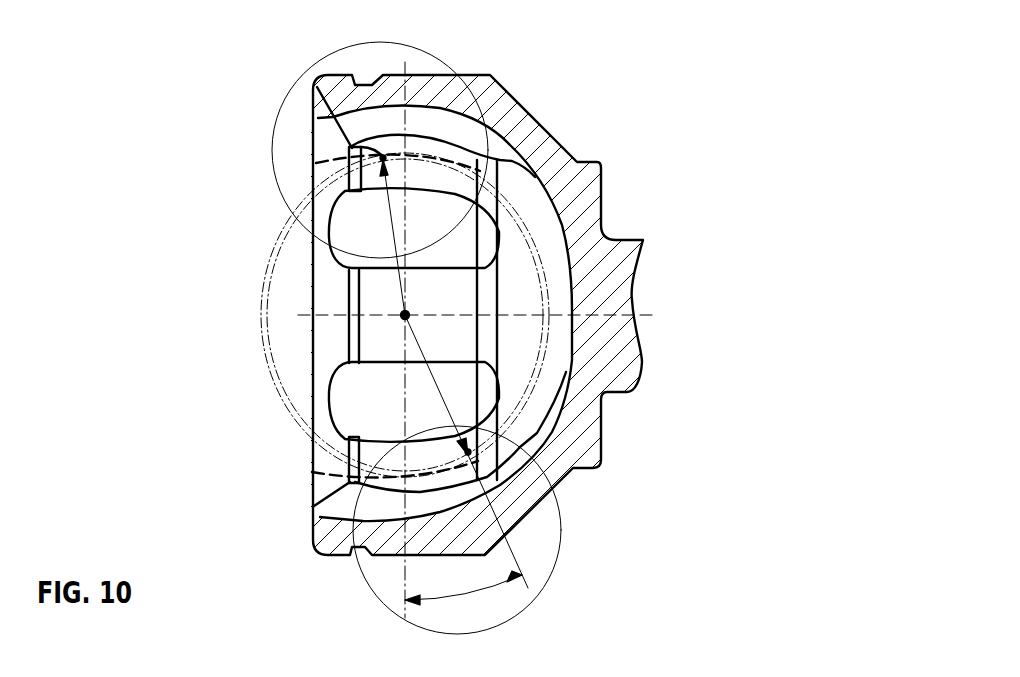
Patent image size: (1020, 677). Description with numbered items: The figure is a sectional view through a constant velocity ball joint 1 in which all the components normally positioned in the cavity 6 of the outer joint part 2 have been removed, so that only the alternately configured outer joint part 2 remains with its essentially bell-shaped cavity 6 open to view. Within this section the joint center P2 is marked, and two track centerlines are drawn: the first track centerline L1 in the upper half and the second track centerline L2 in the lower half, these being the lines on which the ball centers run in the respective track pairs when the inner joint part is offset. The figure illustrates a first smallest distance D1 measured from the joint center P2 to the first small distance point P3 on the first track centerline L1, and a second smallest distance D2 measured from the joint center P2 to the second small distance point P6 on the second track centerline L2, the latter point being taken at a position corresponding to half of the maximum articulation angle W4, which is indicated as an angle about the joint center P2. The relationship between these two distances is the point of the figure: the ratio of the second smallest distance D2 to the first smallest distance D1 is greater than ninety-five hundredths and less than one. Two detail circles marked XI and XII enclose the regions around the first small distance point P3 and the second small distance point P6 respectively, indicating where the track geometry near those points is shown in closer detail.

The constant velocity ball joint 1 is at (623, 214).
The outer joint part 2 is at (548, 125).
The cavity 6 is at (547, 286).
The joint center P2 is at (403, 318).
The first small distance point P3 is at (358, 146).
The second small distance point P6 is at (470, 440).
The first smallest distance D1 is at (356, 247).
The second smallest distance D2 is at (410, 400).
The first track centerline L1 is at (323, 163).
The second track centerline L2 is at (330, 478).
The maximum articulation angle W4 is at (460, 592).
The detail circle XI is at (290, 97).
The detail circle XII is at (563, 527).